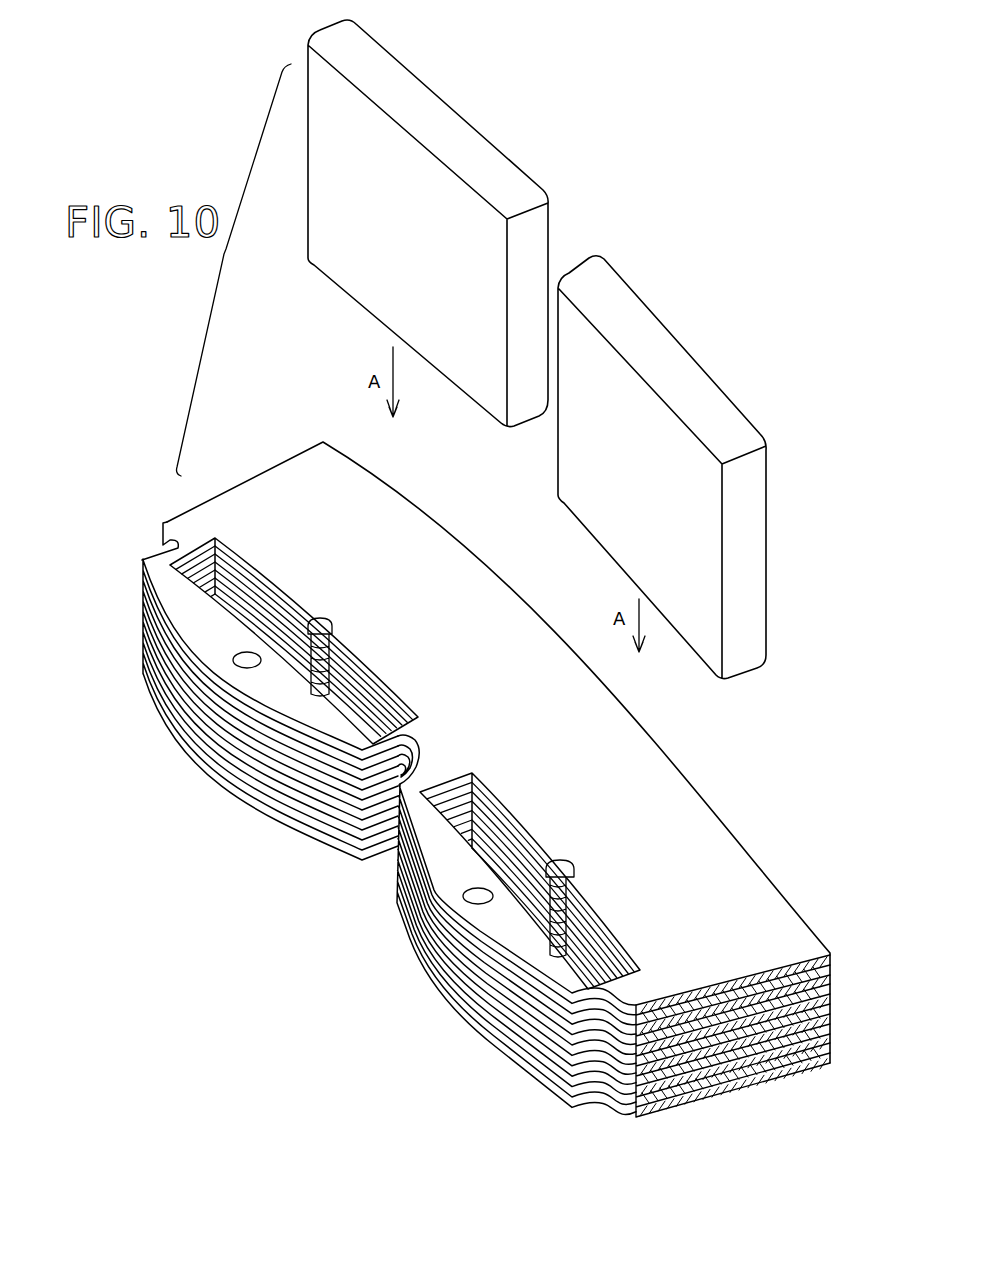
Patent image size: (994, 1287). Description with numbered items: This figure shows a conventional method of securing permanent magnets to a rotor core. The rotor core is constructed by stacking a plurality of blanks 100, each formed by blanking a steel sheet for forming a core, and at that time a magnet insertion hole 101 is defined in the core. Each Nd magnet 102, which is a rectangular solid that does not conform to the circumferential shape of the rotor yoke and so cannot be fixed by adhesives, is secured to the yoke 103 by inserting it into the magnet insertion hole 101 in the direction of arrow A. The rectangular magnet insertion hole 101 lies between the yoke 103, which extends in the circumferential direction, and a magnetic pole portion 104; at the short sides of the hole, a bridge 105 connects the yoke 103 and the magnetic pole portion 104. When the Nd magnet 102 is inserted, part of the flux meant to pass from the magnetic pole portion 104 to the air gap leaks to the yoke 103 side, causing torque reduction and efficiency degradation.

The blank 100 is at (828, 950).
The magnet insertion hole 101 is at (355, 664).
The Nd magnet 102 is at (478, 130).
The yoke 103 is at (694, 818).
The magnetic pole portion 104 is at (302, 710).
The bridge 105 is at (162, 545).